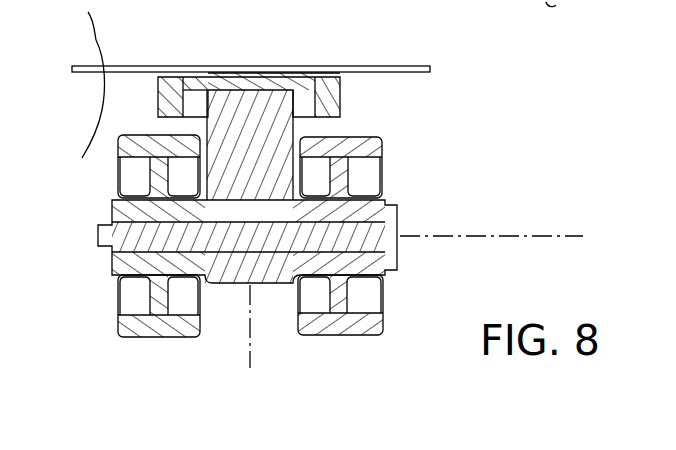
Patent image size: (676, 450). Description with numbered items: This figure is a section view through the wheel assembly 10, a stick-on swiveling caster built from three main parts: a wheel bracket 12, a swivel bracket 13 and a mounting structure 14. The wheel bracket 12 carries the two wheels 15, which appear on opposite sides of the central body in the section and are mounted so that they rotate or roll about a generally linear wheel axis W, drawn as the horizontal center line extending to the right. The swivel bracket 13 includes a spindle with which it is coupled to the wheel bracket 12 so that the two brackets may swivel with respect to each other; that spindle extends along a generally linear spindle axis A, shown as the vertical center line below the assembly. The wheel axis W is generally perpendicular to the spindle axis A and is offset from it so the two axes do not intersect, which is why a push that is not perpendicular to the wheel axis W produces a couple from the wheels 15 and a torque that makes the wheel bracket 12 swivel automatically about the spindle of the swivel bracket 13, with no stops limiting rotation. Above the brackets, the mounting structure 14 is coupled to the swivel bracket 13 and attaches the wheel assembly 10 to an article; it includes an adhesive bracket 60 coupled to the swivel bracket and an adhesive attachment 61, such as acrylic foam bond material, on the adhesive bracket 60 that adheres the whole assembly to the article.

The wheel assembly 10 is at (488, 114).
The wheel bracket 12 is at (340, 121).
The swivel bracket 13 is at (342, 88).
The mounting structure 14 is at (408, 50).
The wheels 15 is at (373, 200).
The adhesive bracket 60 is at (79, 114).
The adhesive attachment 61 is at (79, 21).
The wheel axis W is at (486, 235).
The spindle axis A is at (252, 343).